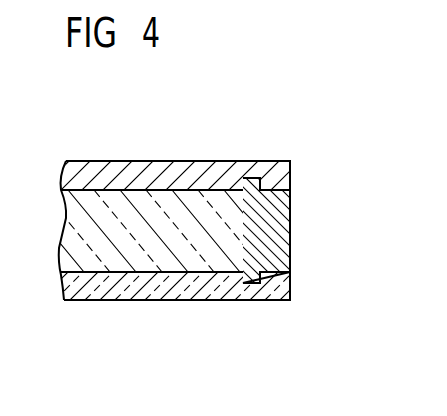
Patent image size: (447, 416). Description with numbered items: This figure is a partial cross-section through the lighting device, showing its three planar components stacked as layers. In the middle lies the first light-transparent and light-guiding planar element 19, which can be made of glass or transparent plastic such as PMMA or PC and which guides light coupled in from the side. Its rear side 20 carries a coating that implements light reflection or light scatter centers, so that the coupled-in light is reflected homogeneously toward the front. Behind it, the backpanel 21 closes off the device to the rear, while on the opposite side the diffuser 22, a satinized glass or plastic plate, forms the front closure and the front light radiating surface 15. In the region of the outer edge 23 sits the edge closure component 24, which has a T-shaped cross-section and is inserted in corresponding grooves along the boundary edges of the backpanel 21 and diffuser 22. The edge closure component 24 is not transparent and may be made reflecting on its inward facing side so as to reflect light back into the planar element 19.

The light radiating surface 15 is at (120, 149).
The light-transparent and light-guiding planar element 19 is at (93, 250).
The rear side 20 is at (161, 272).
The backpanel 21 is at (213, 288).
The diffuser 22 is at (197, 170).
The outer edge 23 is at (315, 188).
The edge closure component 24 is at (290, 240).